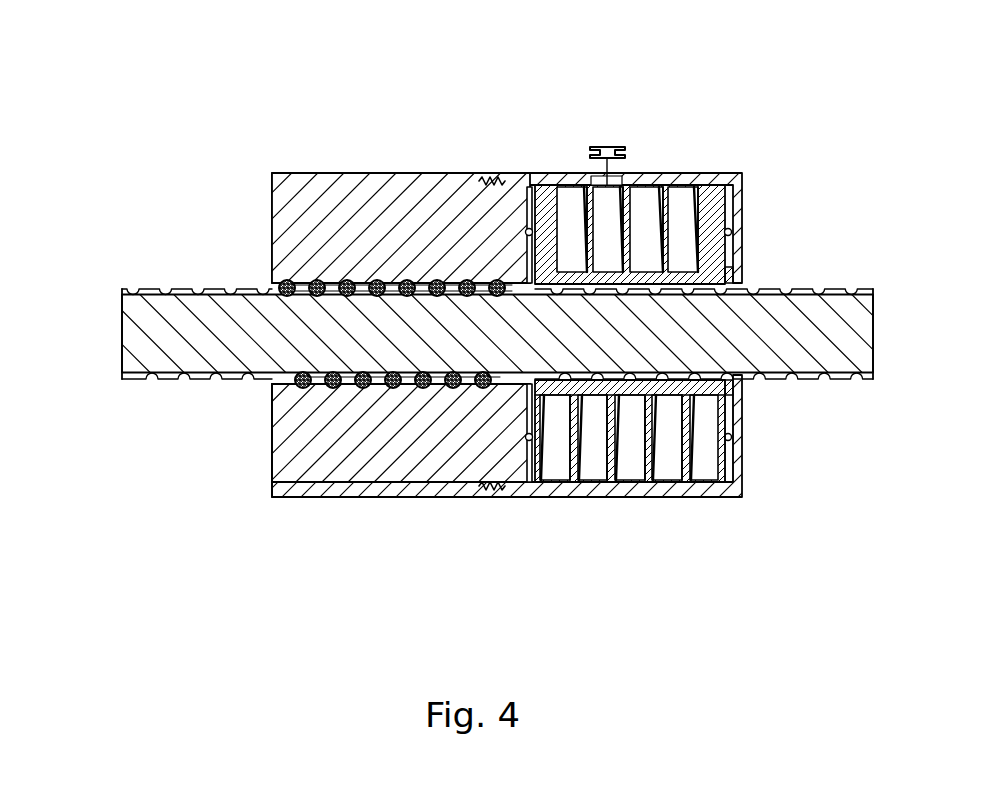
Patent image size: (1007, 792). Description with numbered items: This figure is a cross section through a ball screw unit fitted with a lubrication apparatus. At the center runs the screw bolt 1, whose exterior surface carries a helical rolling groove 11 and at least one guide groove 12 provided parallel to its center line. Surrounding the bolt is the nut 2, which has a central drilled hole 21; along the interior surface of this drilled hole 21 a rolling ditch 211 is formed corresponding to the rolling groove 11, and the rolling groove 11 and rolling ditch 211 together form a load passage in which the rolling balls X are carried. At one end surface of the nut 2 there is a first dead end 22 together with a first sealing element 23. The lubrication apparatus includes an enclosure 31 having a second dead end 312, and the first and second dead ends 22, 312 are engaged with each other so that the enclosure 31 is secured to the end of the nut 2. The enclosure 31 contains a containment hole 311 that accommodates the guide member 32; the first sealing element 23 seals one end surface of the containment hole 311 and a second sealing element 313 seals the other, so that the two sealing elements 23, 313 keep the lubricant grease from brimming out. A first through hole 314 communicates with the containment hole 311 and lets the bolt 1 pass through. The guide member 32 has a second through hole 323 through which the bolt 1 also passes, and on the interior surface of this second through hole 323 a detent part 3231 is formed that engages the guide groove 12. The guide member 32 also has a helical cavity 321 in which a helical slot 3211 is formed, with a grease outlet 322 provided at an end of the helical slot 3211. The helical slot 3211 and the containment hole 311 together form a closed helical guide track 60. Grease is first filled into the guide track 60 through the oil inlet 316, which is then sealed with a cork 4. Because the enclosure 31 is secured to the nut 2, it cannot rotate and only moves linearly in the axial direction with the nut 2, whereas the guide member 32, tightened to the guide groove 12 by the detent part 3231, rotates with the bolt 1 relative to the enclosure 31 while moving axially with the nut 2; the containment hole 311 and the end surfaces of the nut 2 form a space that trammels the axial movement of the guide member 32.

The screw bolt 1 is at (138, 321).
The helical rolling groove 11 is at (157, 380).
The guide groove 12 is at (150, 289).
The nut 2 is at (405, 484).
The central drilled hole 21 is at (272, 378).
The rolling ditch 211 is at (305, 388).
The first dead end 22 is at (482, 194).
The first sealing element 23 is at (537, 180).
The enclosure 31 is at (676, 311).
The containment hole 311 is at (683, 203).
The second dead end 312 is at (490, 178).
The second sealing element 313 is at (730, 232).
The first through hole 314 is at (735, 276).
The oil inlet 316 is at (605, 270).
The guide member 32 is at (675, 500).
The helical cavity 321 is at (657, 497).
The helical slot 3211 is at (622, 497).
The grease outlet 322 is at (717, 396).
The second through hole 323 is at (715, 288).
The detent part 3231 is at (632, 262).
The cork 4 is at (609, 146).
The helical guide track 60 is at (672, 497).
The rolling balls X is at (272, 289).